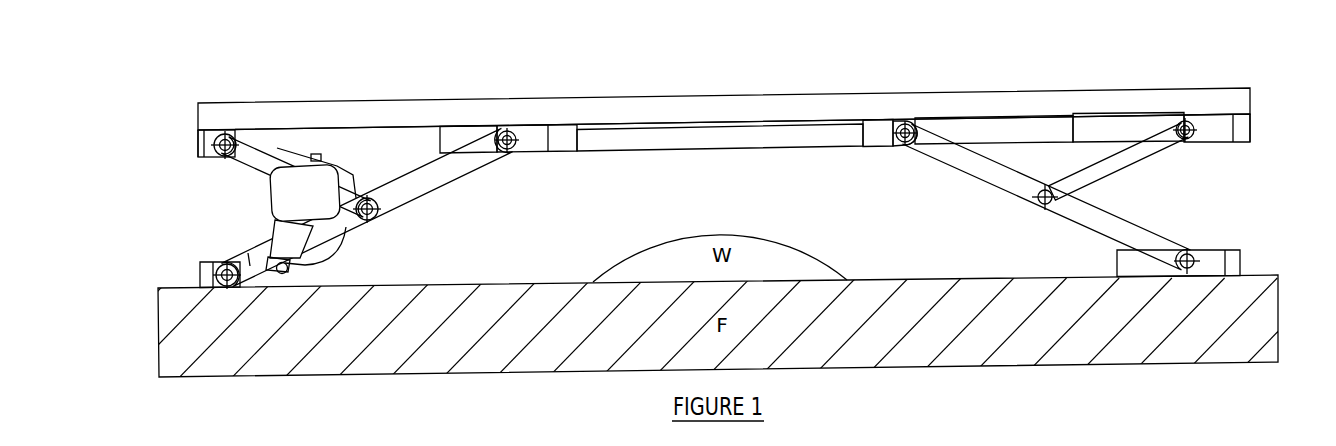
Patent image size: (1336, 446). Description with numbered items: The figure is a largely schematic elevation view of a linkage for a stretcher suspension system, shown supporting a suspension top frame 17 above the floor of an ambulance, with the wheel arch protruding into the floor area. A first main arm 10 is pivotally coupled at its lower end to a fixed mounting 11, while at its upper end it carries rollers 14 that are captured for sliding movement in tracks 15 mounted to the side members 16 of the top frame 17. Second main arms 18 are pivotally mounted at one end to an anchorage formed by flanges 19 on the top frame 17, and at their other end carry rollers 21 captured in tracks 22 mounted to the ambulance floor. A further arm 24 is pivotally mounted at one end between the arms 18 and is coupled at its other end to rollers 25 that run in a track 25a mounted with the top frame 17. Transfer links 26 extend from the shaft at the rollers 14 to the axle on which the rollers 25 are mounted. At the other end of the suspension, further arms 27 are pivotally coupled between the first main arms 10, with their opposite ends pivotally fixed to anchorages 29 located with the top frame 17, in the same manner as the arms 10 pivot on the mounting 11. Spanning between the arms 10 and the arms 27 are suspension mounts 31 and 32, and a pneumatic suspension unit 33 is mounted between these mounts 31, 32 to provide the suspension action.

The first main arm 10 is at (420, 183).
The fixed mounting 11 is at (222, 267).
The rollers 14 is at (513, 130).
The tracks 15 is at (450, 140).
The side members 16 is at (643, 123).
The suspension top frame 17 is at (1081, 87).
The second main arms 18 is at (980, 168).
The flanges 19 is at (910, 124).
The rollers 21 is at (1193, 248).
The tracks 22 is at (1213, 260).
The further arm 24 is at (1137, 153).
The rollers 25 is at (1192, 120).
The track 25a is at (1213, 128).
The transfer links 26 is at (775, 137).
The further arms 27 is at (257, 157).
The anchorages 29 is at (232, 140).
The suspension mount 31 is at (317, 248).
The suspension mount 32 is at (352, 165).
The pneumatic suspension unit 33 is at (283, 195).